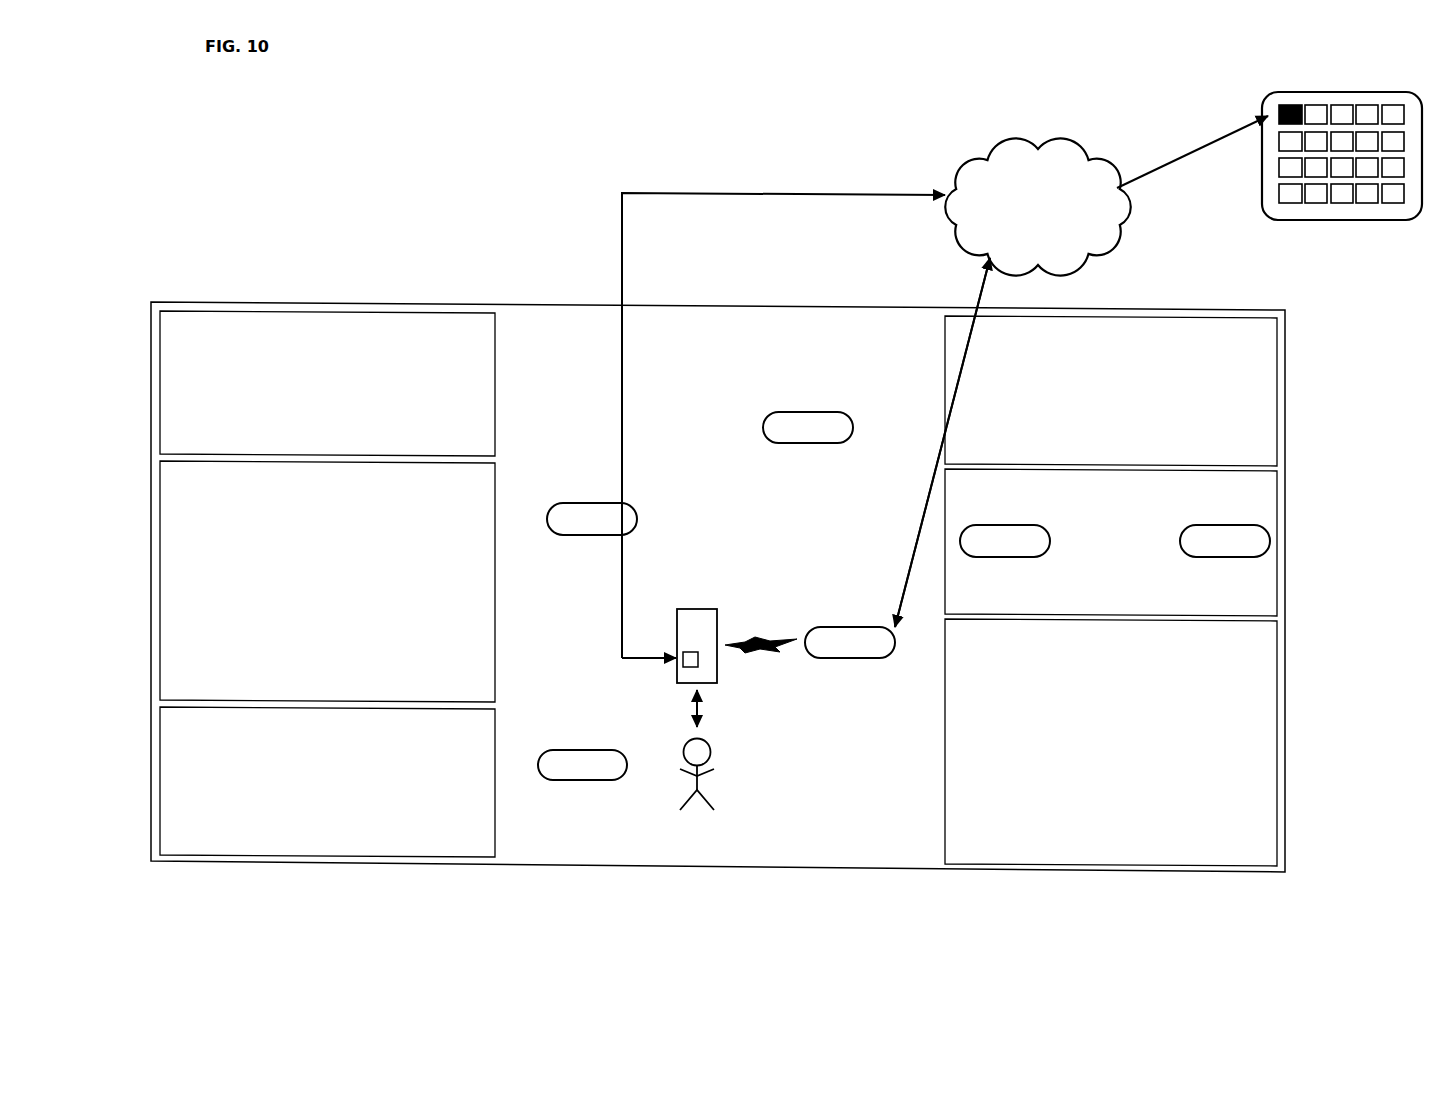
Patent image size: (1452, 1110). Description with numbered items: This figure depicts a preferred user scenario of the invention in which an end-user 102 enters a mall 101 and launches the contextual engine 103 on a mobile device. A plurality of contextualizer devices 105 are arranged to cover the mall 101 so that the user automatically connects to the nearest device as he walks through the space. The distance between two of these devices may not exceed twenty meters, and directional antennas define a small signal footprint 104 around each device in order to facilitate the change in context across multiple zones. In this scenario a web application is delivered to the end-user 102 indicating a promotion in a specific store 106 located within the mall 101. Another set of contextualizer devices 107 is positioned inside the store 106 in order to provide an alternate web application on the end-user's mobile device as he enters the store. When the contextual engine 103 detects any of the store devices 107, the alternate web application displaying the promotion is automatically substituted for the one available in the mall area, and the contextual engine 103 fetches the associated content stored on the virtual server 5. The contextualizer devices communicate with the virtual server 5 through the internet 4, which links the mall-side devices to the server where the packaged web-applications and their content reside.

The internet 4 is at (1038, 206).
The virtual server 5 is at (1350, 147).
The mall 101 is at (540, 320).
The end-user 102 is at (697, 792).
The contextual engine 103 is at (697, 636).
The signal footprint 104 is at (878, 766).
The contextualizer devices 105 is at (716, 596).
The store 106 is at (1264, 497).
The contextualizer devices 107 is at (1115, 541).